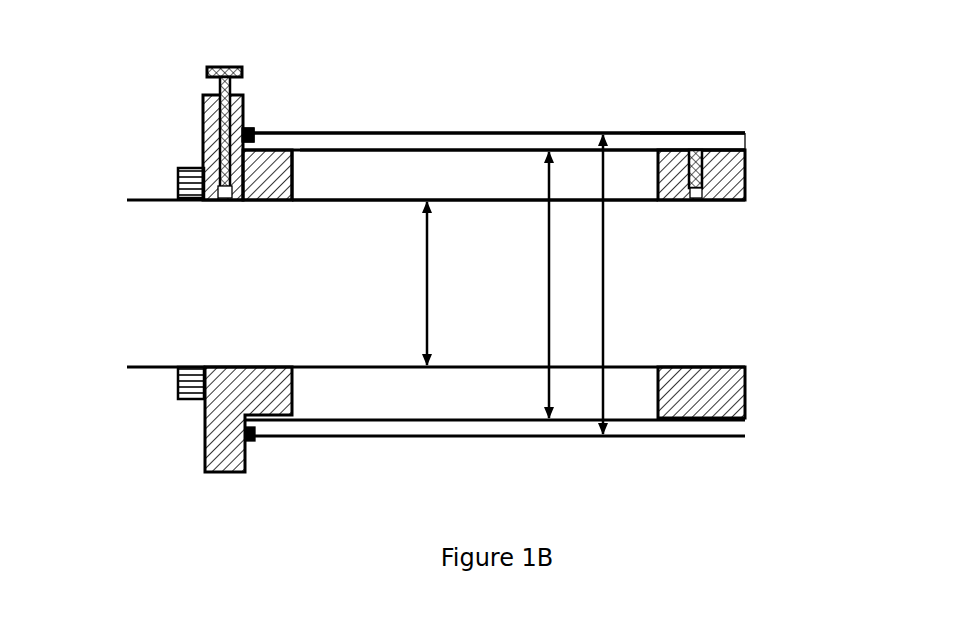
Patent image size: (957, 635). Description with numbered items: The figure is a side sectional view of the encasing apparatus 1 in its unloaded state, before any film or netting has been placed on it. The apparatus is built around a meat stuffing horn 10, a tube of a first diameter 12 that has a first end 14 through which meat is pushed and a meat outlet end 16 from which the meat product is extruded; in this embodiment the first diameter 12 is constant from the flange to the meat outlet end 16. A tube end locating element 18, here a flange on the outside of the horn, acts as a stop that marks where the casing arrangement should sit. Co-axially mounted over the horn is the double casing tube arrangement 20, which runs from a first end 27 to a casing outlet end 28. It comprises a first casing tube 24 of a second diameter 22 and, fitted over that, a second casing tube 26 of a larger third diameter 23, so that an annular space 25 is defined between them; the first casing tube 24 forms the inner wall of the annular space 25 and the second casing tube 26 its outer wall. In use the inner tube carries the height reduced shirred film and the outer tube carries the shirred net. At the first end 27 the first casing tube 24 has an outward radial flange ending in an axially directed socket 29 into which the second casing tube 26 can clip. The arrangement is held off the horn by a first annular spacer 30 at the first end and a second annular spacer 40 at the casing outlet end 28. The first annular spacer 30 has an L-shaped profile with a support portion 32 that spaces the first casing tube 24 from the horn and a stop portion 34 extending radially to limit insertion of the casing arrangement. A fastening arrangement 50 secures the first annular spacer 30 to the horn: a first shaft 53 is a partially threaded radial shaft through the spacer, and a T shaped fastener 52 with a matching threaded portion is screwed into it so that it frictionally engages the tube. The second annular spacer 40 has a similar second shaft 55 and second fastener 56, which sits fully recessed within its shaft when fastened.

The encasing apparatus 1 is at (124, 71).
The meat stuffing horn 10 is at (344, 195).
The first diameter 12 is at (443, 283).
The first end 14 is at (124, 285).
The meat outlet end 16 is at (757, 283).
The tube end locating element 18 is at (175, 178).
The double casing tube arrangement 20 is at (573, 127).
The second diameter 22 is at (529, 285).
The third diameter 23 is at (583, 284).
The first casing tube 24 is at (461, 154).
The annular space 25 is at (748, 140).
The second casing tube 26 is at (461, 131).
The first end 27 is at (253, 100).
The casing outlet end 28 is at (722, 128).
The socket 29 is at (252, 124).
The first annular spacer 30 is at (199, 128).
The support portion 32 is at (299, 385).
The stop portion 34 is at (250, 458).
The second annular spacer 40 is at (748, 175).
The fastening arrangement 50 is at (196, 66).
The T shaped fastener 52 is at (284, 175).
The first shaft 53 is at (224, 207).
The second shaft 55 is at (697, 207).
The second fastener 56 is at (687, 178).